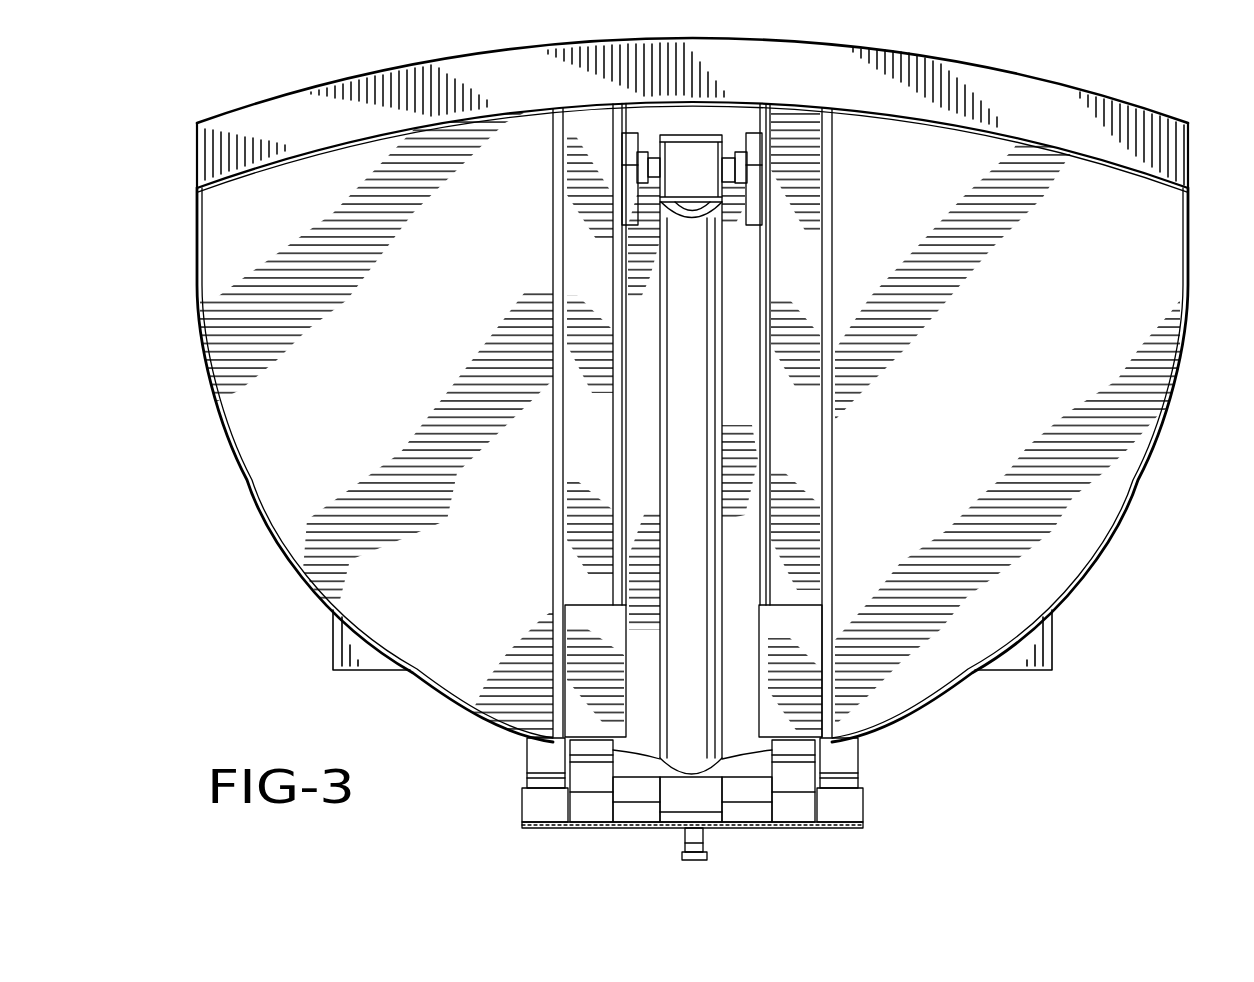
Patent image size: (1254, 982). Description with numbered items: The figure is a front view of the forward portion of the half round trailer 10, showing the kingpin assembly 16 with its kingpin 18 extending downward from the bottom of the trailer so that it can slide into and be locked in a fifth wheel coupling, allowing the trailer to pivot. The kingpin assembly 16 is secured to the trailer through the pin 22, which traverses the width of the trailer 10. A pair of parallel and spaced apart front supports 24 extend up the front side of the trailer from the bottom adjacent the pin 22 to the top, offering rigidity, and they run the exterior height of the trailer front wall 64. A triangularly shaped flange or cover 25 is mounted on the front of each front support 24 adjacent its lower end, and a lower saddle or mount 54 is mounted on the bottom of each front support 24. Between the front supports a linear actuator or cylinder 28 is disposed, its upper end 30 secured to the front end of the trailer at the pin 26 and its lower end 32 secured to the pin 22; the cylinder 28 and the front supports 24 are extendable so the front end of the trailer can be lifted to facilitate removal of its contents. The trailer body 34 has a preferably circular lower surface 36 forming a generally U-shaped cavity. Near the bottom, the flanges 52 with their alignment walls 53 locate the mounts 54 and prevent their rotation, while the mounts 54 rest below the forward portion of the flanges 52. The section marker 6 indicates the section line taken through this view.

The half round trailer 10 is at (1090, 82).
The kingpin assembly 16 is at (547, 826).
The kingpin 18 is at (682, 830).
The pin 22 is at (745, 793).
The front supports 24 is at (577, 252).
The triangularly shaped flange or cover 25 is at (578, 631).
The pin 26 is at (730, 163).
The linear actuator or cylinder 28 is at (680, 468).
The upper end 30 is at (697, 147).
The lower end 32 is at (695, 795).
The body 34 is at (1118, 527).
The lower surface 36 is at (640, 760).
The flanges 52 is at (590, 737).
The alignment walls 53 is at (567, 749).
The lower saddle or mount 54 is at (593, 778).
The trailer front wall 64 is at (1133, 276).
The section line 6- 6 is at (794, 464).